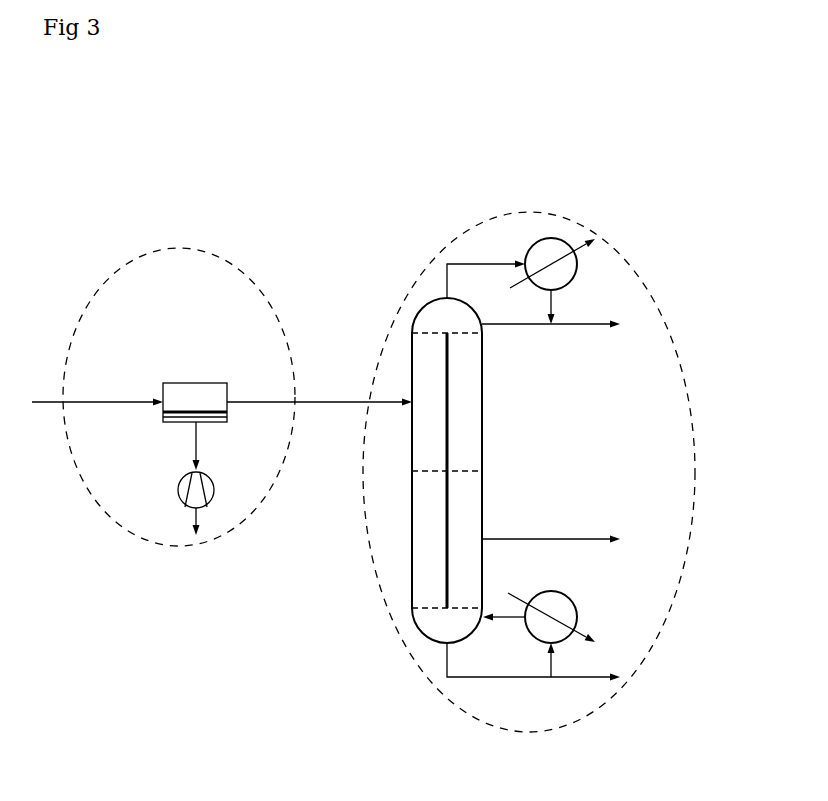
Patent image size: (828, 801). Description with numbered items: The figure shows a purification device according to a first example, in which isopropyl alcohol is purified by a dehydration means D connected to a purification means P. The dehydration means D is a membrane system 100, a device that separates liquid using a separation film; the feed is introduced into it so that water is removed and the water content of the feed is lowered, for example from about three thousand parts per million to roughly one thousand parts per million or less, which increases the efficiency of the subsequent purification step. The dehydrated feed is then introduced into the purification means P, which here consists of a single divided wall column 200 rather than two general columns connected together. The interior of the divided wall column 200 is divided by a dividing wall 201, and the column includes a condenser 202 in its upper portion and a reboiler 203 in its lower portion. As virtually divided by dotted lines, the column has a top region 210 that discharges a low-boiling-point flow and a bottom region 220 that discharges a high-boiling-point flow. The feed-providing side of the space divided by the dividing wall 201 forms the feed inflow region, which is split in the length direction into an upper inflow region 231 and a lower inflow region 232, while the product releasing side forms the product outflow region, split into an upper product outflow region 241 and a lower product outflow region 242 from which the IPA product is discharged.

The dehydration means D is at (180, 248).
The purification means P is at (530, 212).
The membrane system 100 is at (196, 383).
The divided wall column 200 is at (414, 291).
The dividing wall 201 is at (447, 378).
The condenser 202 is at (577, 266).
The reboiler 203 is at (577, 617).
The top region 210 is at (429, 315).
The bottom region 220 is at (443, 627).
The upper inflow region 231 is at (425, 371).
The lower inflow region 232 is at (425, 538).
The upper product outflow region 241 is at (468, 423).
The lower product outflow region 242 is at (468, 518).